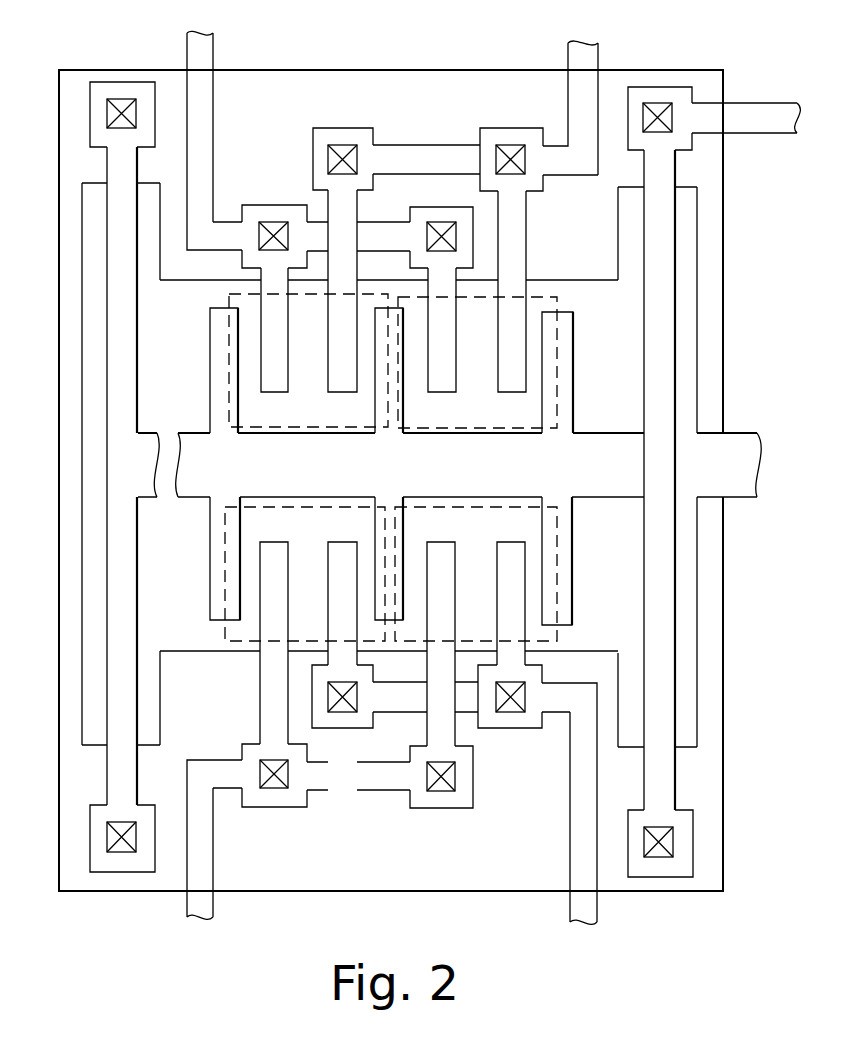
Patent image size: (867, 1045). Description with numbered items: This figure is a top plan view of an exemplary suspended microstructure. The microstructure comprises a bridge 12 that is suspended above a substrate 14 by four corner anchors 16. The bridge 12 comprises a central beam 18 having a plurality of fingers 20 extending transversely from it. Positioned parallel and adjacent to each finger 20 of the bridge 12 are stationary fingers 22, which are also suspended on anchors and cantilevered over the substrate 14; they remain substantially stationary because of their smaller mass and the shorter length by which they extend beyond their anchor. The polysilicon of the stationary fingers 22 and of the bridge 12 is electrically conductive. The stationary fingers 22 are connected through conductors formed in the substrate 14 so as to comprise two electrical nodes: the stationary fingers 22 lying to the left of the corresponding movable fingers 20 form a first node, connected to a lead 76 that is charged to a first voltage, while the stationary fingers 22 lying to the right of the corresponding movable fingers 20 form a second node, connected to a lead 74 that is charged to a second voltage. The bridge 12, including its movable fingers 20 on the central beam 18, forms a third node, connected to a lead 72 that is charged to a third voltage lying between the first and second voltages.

The bridge 12 is at (590, 426).
The substrate 14 is at (266, 116).
The corner anchors 16 is at (91, 112).
The central beam 18 is at (414, 479).
The fingers 20 is at (215, 378).
The stationary fingers 22 is at (286, 374).
The lead 72 is at (778, 103).
The lead 74 is at (214, 52).
The lead 76 is at (567, 55).